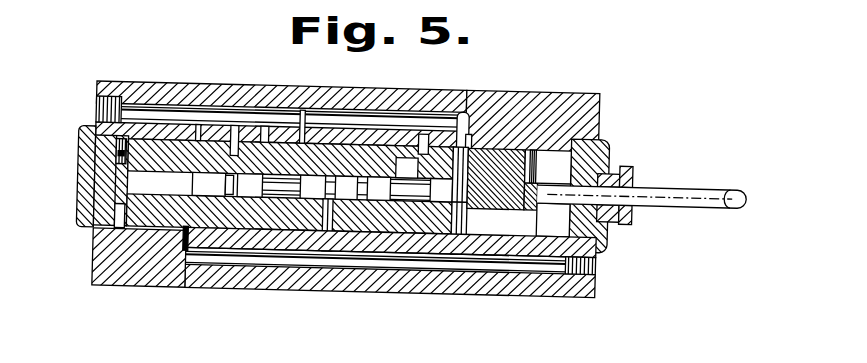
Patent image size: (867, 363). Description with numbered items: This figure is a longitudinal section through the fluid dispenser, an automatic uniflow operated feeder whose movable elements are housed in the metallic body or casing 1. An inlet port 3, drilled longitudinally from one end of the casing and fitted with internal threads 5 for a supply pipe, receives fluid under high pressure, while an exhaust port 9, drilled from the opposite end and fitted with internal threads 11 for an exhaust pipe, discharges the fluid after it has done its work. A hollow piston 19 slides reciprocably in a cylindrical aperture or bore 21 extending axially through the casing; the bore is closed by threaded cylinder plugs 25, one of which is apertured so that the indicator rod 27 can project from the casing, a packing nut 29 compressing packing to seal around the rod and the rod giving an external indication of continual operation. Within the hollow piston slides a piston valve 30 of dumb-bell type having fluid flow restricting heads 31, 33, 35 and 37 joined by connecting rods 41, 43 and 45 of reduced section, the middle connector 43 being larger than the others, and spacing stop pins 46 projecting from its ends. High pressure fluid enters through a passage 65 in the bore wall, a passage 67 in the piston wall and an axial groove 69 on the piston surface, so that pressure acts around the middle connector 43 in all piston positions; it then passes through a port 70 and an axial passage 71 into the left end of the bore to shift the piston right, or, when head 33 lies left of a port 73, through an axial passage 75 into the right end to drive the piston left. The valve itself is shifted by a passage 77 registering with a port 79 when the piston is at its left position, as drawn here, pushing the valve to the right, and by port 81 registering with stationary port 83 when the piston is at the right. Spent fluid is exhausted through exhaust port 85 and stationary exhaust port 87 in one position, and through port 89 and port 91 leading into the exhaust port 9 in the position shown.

The body or casing 1 is at (506, 111).
The inlet port 3 is at (455, 260).
The internal threads 5 is at (601, 263).
The exhaust port 9 is at (151, 101).
The internal threads 11 is at (96, 102).
The hollow piston 19 is at (174, 220).
The cylindrical aperture or bore 21 is at (580, 84).
The cylinder plugs 25 is at (89, 152).
The indicator rod 27 is at (698, 178).
The packing nut 29 is at (634, 158).
The piston valve 30 is at (346, 188).
The fluid flow restricting head 31 is at (250, 186).
The fluid flow restricting head 33 is at (313, 187).
The fluid flow restricting head 35 is at (379, 189).
The fluid flow restricting head 37 is at (441, 190).
The connecting rod 41 is at (295, 144).
The middle connector 43 is at (358, 170).
The connecting rod 45 is at (415, 161).
The spacing stop pins 46 is at (226, 182).
The passage 65 is at (334, 219).
The passage 67 is at (327, 224).
The groove 69 is at (282, 227).
The port 70 is at (384, 104).
The axial passage 71 is at (304, 134).
The port 73 is at (266, 236).
The axial passage 75 is at (412, 244).
The passage 77 is at (196, 233).
The port 79 is at (209, 237).
The port 81 is at (464, 223).
The stationary port 83 is at (495, 234).
The exhaust port 85 is at (200, 140).
The stationary exhaust port 87 is at (235, 136).
The port 89 is at (472, 133).
The port 91 is at (469, 130).